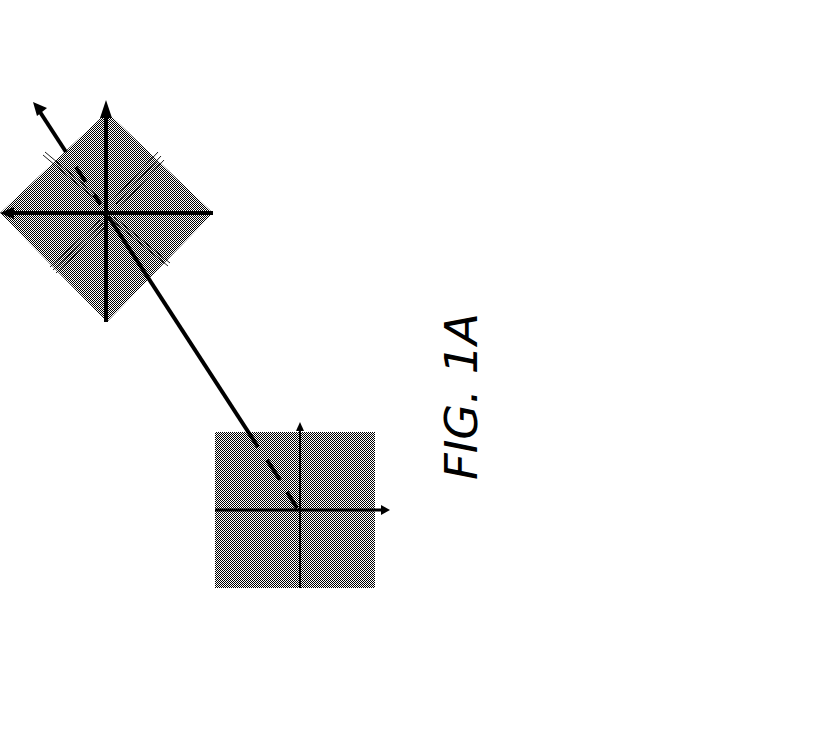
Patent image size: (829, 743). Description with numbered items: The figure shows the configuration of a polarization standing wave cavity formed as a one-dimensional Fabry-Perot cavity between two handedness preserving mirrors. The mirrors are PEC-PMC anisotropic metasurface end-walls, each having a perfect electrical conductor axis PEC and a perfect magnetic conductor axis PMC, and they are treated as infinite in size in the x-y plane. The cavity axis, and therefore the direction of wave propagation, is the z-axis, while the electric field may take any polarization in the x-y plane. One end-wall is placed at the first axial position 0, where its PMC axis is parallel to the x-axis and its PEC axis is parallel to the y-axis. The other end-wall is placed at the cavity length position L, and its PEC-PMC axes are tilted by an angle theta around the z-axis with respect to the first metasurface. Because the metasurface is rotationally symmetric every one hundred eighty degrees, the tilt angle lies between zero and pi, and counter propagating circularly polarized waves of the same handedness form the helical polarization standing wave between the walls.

The cavity length position z= L is at (129, 268).
The end-wall position z= 0 is at (302, 505).
The perfect magnetic conductor axis PMC is at (103, 328).
The perfect electrical conductor axis PEC is at (220, 265).